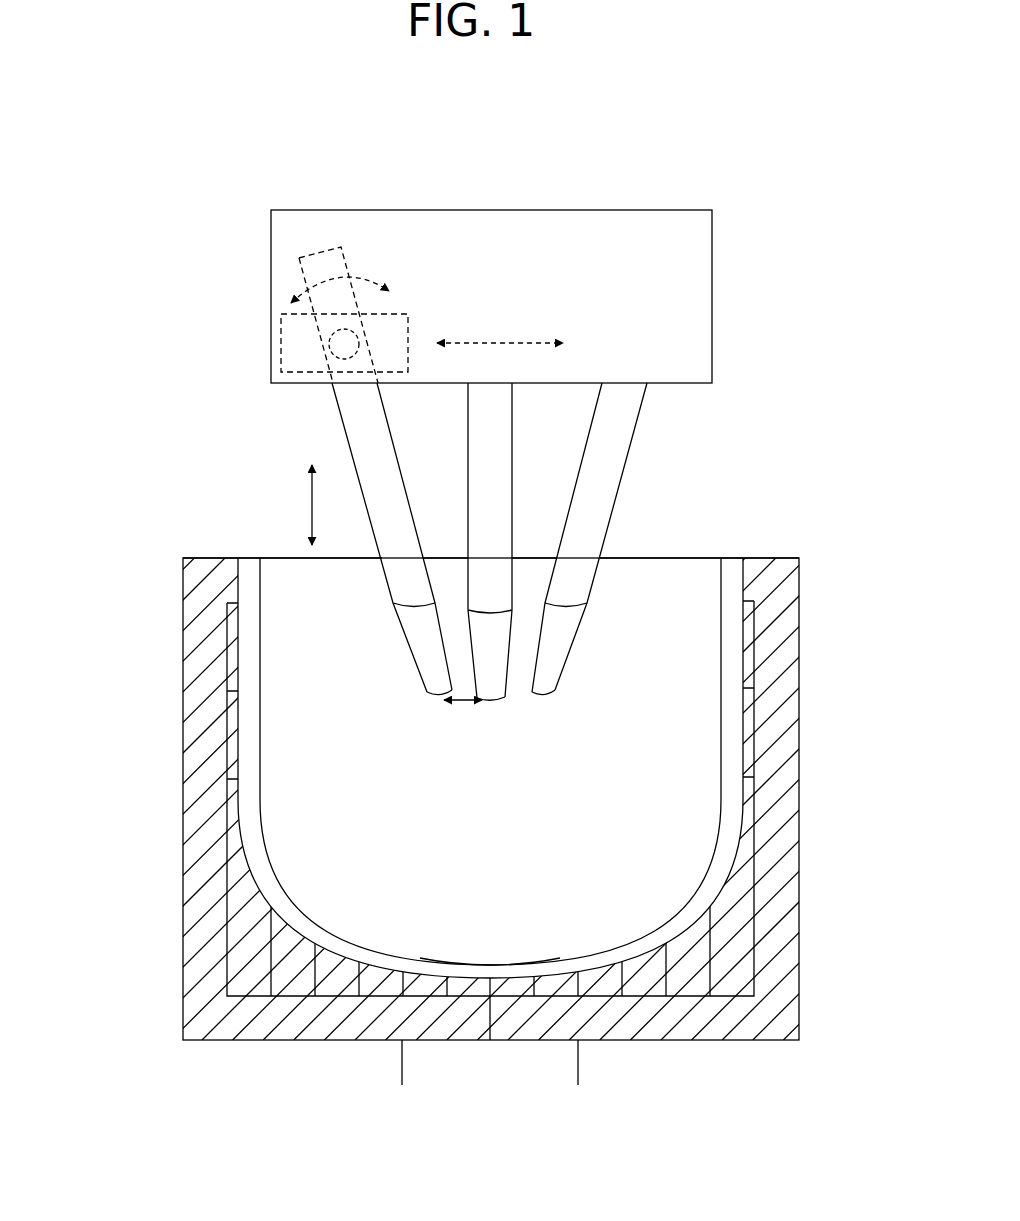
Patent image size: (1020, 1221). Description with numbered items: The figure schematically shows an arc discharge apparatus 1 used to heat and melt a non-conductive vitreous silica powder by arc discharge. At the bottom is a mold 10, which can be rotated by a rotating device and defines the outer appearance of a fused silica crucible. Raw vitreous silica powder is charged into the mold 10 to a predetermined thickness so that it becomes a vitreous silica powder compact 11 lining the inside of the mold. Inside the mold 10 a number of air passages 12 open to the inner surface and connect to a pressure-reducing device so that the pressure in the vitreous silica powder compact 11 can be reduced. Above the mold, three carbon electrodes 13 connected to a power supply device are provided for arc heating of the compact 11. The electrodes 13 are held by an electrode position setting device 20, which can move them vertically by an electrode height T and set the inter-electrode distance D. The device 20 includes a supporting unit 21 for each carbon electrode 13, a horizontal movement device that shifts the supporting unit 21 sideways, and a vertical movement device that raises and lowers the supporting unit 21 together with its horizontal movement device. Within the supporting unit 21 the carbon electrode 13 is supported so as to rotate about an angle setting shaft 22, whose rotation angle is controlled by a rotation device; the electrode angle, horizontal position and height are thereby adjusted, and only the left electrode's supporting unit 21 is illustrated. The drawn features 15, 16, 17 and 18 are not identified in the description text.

The arc discharge apparatus 1 is at (783, 152).
The mold 10 is at (800, 990).
The vitreous silica powder compact 11 is at (556, 768).
The air passages 12 is at (760, 625).
The carbon electrodes 13 is at (341, 417).
The opening / upper end of crucible 15 is at (730, 557).
The inner surface of crucible 16 is at (721, 683).
The outer surface of crucible 17 is at (666, 900).
The bottom portion of crucible 18 is at (475, 962).
The electrode position setting device 20 is at (714, 252).
The supporting unit 21 is at (401, 313).
The angle setting shaft 22 is at (328, 350).